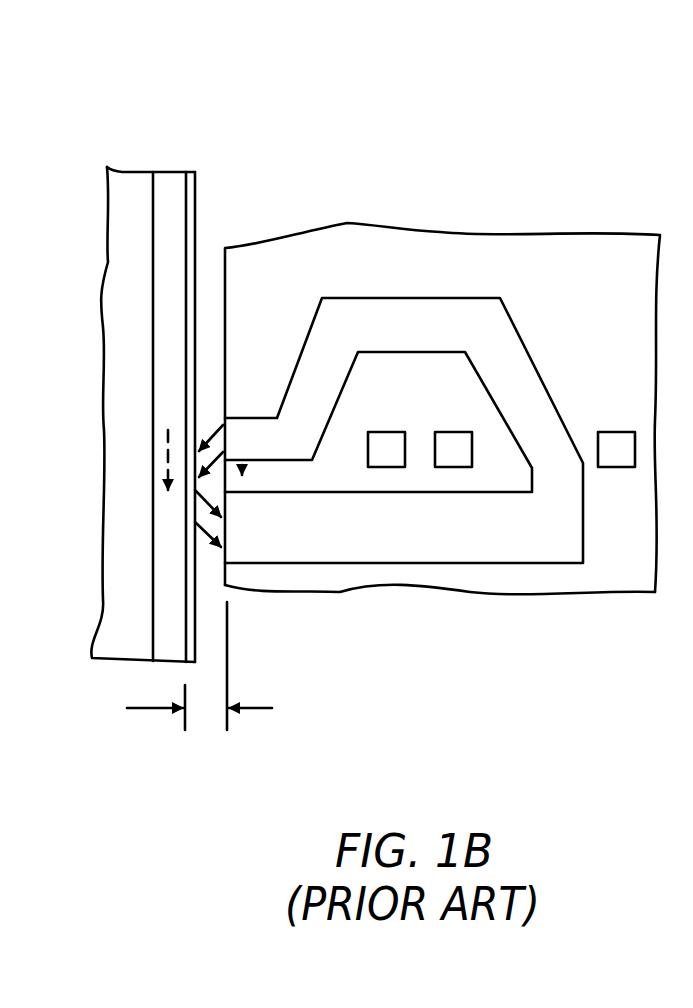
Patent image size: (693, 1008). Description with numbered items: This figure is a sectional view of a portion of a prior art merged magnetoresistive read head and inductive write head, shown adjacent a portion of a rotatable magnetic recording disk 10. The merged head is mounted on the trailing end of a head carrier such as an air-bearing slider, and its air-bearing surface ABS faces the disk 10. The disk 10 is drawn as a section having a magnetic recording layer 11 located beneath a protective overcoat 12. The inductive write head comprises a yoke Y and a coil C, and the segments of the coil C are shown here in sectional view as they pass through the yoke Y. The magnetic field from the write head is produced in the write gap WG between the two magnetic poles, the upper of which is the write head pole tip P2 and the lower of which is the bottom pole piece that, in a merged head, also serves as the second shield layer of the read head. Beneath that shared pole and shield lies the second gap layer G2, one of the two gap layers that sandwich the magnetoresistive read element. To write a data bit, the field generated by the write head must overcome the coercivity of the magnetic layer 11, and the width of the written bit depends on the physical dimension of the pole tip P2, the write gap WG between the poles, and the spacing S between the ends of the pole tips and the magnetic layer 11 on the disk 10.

The disk 10 is at (127, 180).
The magnetic layer 11 is at (175, 187).
The protective overcoat 12 is at (188, 173).
The air-bearing surface ABS is at (223, 279).
The write head pole tip P2 is at (253, 440).
The yoke Y is at (552, 456).
The coil C is at (390, 448).
The write gap WG is at (275, 477).
The second gap layer G2 is at (527, 573).
The spacing S is at (199, 666).